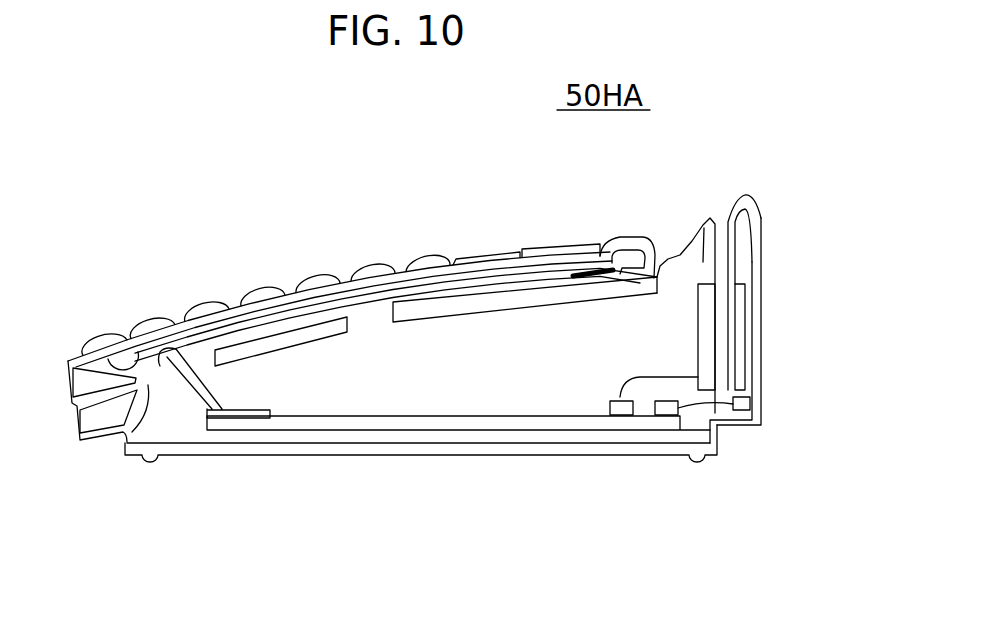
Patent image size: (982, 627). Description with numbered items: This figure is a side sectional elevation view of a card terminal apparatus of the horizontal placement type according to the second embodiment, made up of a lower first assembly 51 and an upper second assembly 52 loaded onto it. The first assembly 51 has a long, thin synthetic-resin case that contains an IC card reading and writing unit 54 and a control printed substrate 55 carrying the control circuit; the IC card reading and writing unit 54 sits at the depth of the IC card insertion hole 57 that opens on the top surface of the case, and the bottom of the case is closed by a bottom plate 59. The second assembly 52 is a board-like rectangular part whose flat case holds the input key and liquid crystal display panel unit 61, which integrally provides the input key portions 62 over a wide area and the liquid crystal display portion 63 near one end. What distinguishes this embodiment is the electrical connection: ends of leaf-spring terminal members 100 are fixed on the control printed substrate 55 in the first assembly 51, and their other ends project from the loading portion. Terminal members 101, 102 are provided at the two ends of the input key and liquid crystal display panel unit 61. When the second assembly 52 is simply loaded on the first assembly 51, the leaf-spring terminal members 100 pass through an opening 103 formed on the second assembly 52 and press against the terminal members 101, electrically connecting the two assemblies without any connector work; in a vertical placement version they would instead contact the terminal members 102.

The first assembly 51 is at (777, 236).
The second assembly 52 is at (486, 237).
The IC card reading and writing unit 54 is at (737, 340).
The control printed substrate 55 is at (316, 423).
The IC card insertion hole 57 is at (720, 222).
The bottom plate 59 is at (242, 457).
The input key and liquid crystal display panel unit 61 is at (290, 298).
The input key portions 62 is at (212, 306).
The liquid crystal display portion 63 is at (576, 242).
The leaf-spring terminal members 100 is at (193, 397).
The terminal members 101 is at (115, 363).
The terminal members 102 is at (600, 280).
The opening 103 is at (120, 440).